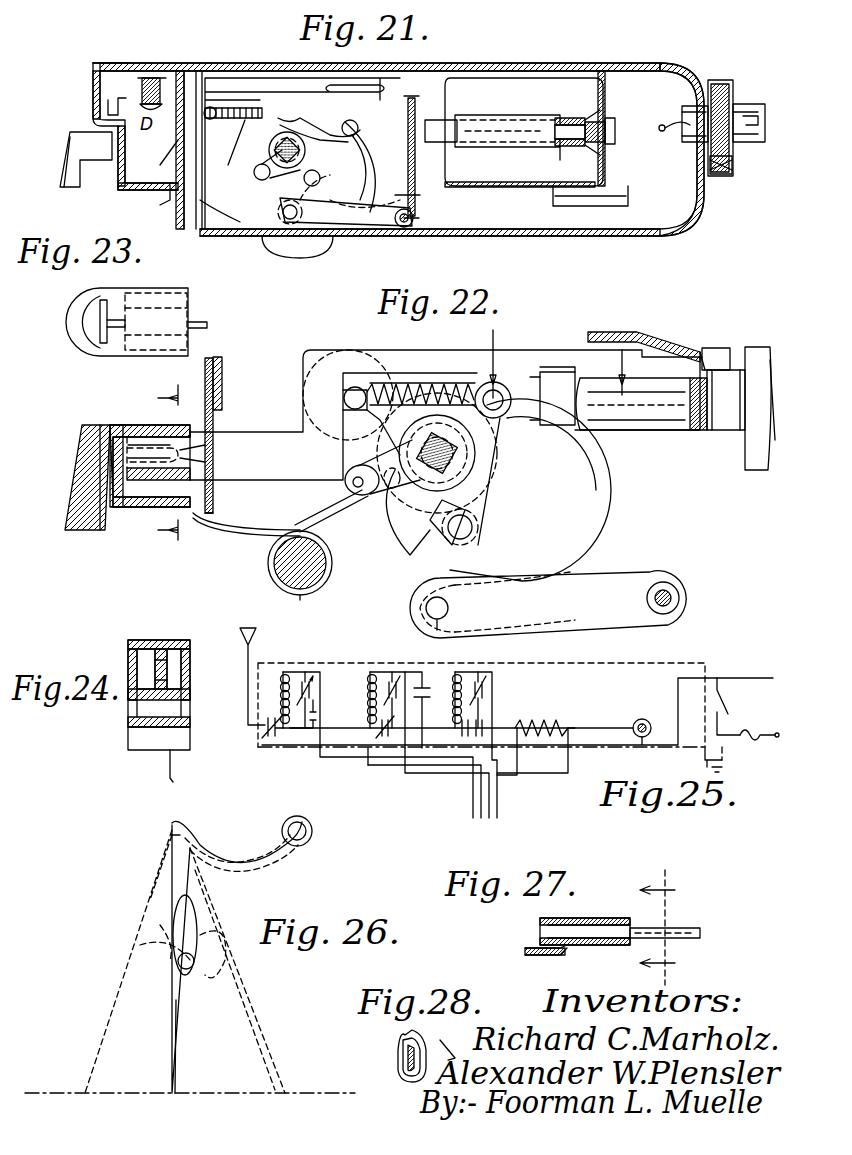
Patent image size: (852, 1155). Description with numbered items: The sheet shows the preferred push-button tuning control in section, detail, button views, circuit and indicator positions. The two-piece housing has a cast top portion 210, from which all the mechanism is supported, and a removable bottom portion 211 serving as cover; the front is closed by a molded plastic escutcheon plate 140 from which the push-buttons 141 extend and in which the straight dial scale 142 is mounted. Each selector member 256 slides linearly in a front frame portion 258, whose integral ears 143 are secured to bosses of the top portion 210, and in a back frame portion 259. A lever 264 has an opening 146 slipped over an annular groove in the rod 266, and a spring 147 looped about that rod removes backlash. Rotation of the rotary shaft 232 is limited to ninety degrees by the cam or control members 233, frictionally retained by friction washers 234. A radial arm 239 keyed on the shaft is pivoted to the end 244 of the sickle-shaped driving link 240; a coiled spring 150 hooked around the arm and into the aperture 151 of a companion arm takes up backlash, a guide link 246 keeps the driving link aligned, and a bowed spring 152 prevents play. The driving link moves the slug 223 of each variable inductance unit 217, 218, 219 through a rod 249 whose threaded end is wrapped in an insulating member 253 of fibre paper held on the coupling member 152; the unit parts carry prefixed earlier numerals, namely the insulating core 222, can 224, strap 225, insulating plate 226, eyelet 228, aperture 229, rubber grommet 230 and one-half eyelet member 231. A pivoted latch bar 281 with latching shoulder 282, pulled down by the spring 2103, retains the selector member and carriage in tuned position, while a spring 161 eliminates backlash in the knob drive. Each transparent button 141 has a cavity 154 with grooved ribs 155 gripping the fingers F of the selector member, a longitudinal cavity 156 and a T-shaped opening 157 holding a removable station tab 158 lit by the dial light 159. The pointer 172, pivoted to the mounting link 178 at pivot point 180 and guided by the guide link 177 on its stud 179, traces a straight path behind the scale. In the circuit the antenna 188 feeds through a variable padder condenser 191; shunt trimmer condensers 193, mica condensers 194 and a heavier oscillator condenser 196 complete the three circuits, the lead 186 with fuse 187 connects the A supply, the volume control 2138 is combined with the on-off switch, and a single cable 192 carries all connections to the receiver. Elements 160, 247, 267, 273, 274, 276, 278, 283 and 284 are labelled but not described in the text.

In FIG. 21, the escutcheon plate 140 is at (108, 62).
In FIG. 21, the push-button 141 is at (70, 144).
In FIG. 24, the push-button 141 is at (188, 767).
In FIG. 21, the dial scale 142 is at (95, 92).
In FIG. 21, the integral ears 143 is at (158, 76).
In FIG. 22, the opening 146 is at (272, 565).
In FIG. 21, the spring 147 is at (233, 136).
In FIG. 22, the spring 147 is at (252, 535).
In FIG. 21, the coiled spring 150 is at (272, 150).
In FIG. 22, the coiled spring 150 is at (355, 468).
In FIG. 21, the aperture 151 is at (271, 174).
In FIG. 22, the aperture 151 is at (360, 500).
In FIG. 22, the coupling member 152 is at (560, 368).
In FIG. 27, the coupling member 152 is at (585, 945).
In FIG. 28, the coupling member 152 is at (400, 1056).
In FIG. 24, the cavity 154 is at (140, 665).
In FIG. 23, the ribs 155 is at (158, 436).
In FIG. 24, the ribs 155 is at (172, 645).
In FIG. 23, the cavity 156 is at (130, 510).
In FIG. 24, the cavity 156 is at (135, 712).
In FIG. 23, the T-shaped opening 157 is at (105, 318).
In FIG. 23, the station tab 158 is at (100, 338).
In FIG. 25, the dial light 159 is at (640, 718).
In FIG. 21, the trigger housing 160 is at (200, 205).
In FIG. 21, the spring 161 is at (192, 72).
In FIG. 21, the pointer 172 is at (105, 107).
In FIG. 26, the pointer 172 is at (98, 1060).
In FIG. 26, the guide link 177 is at (142, 930).
In FIG. 26, the mounting link 178 is at (235, 842).
In FIG. 26, the stud 179 is at (178, 961).
In FIG. 26, the pivot point 180 is at (185, 820).
In FIG. 25, the lead 186 is at (746, 752).
In FIG. 25, the fuse 187 is at (758, 730).
In FIG. 25, the antenna 188 is at (254, 662).
In FIG. 25, the variable padder condenser 191 is at (270, 745).
In FIG. 25, the cable 192 is at (472, 798).
In FIG. 25, the shunt trimmer condensers 193 is at (314, 696).
In FIG. 25, the mica condensers 194 is at (313, 728).
In FIG. 25, the condenser 196 is at (426, 668).
In FIG. 21, the top portion 210 is at (480, 68).
In FIG. 21, the bottom portion 211 is at (590, 236).
In FIG. 25, the variable inductance unit 217 is at (278, 670).
In FIG. 25, the variable inductance unit 218 is at (460, 668).
In FIG. 25, the variable inductance unit 219 is at (370, 670).
In FIG. 22, the insulating core 222 is at (748, 432).
In FIG. 21, the slug 223 is at (567, 116).
In FIG. 22, the slug 223 is at (700, 430).
In FIG. 22, the shielding can 224 is at (758, 347).
In FIG. 21, the strap 225 is at (500, 192).
In FIG. 21, the insulating plate 226 is at (600, 72).
In FIG. 21, the eyelet 228 is at (617, 130).
In FIG. 21, the aperture 229 is at (576, 160).
In FIG. 21, the rubber grommet 230 is at (602, 115).
In FIG. 21, the one-half eyelet member 231 is at (612, 148).
In FIG. 22, the rotary shaft 232 is at (455, 468).
In FIG. 22, the control member 233 is at (408, 548).
In FIG. 22, the friction washers 234 is at (470, 462).
In FIG. 21, the radial arm 239 is at (280, 197).
In FIG. 22, the radial arm 239 is at (475, 510).
In FIG. 21, the sickle-shaped driving link 240 is at (372, 184).
In FIG. 22, the sickle-shaped driving link 240 is at (610, 495).
In FIG. 22, the body portion 244 is at (432, 583).
In FIG. 21, the guide link 246 is at (350, 226).
In FIG. 22, the guide link 246 is at (620, 575).
In FIG. 21, the link 247 is at (400, 205).
In FIG. 22, the rod 249 is at (652, 412).
In FIG. 27, the rod 249 is at (702, 932).
In FIG. 28, the rod 249 is at (445, 1035).
In FIG. 27, the insulating member 253 is at (585, 918).
In FIG. 28, the insulating member 253 is at (400, 1075).
In FIG. 22, the selector member 256 is at (420, 350).
In FIG. 24, the selector member 256 is at (165, 682).
In FIG. 21, the front frame portion 258 is at (178, 185).
In FIG. 22, the front frame portion 258 is at (222, 362).
In FIG. 21, the back frame portion 259 is at (414, 180).
In FIG. 22, the lever 264 is at (305, 496).
In FIG. 22, the rod 266 is at (312, 592).
In FIG. 22, the cam track 267 is at (400, 416).
In FIG. 22, the spring 273 is at (440, 375).
In FIG. 22, the spring pin 274 is at (348, 390).
In FIG. 21, the lever 276 is at (319, 140).
In FIG. 22, the guide 278 is at (345, 413).
In FIG. 22, the latch bar 281 is at (640, 323).
In FIG. 22, the latching shoulder 282 is at (700, 350).
In FIG. 22, the bracket 283 is at (729, 347).
In FIG. 22, the strip 284 is at (220, 395).
In FIG. 21, the spring 2103 is at (440, 143).
In FIG. 25, the volume control 2138 is at (545, 722).